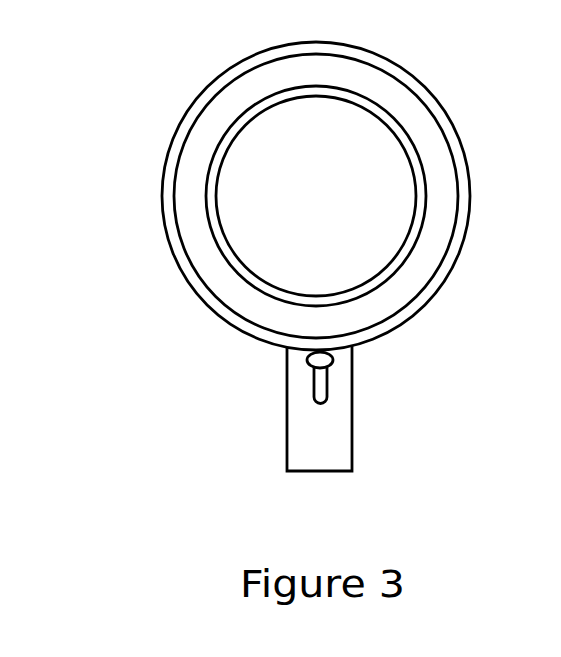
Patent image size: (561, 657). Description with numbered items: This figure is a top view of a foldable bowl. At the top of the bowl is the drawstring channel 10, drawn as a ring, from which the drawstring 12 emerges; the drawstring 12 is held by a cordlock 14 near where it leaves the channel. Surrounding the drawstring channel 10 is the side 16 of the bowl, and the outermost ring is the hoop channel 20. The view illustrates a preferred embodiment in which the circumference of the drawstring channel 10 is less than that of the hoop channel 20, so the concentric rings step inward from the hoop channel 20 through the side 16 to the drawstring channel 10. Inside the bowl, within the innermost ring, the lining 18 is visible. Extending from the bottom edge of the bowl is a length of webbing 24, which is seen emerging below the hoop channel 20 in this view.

The drawstring channel 10 is at (250, 117).
The drawstring 12 is at (322, 392).
The cordlock 14 is at (308, 360).
The side 16 is at (203, 255).
The lining 18 is at (275, 200).
The hoop channel 20 is at (408, 86).
The webbing 24 is at (337, 445).